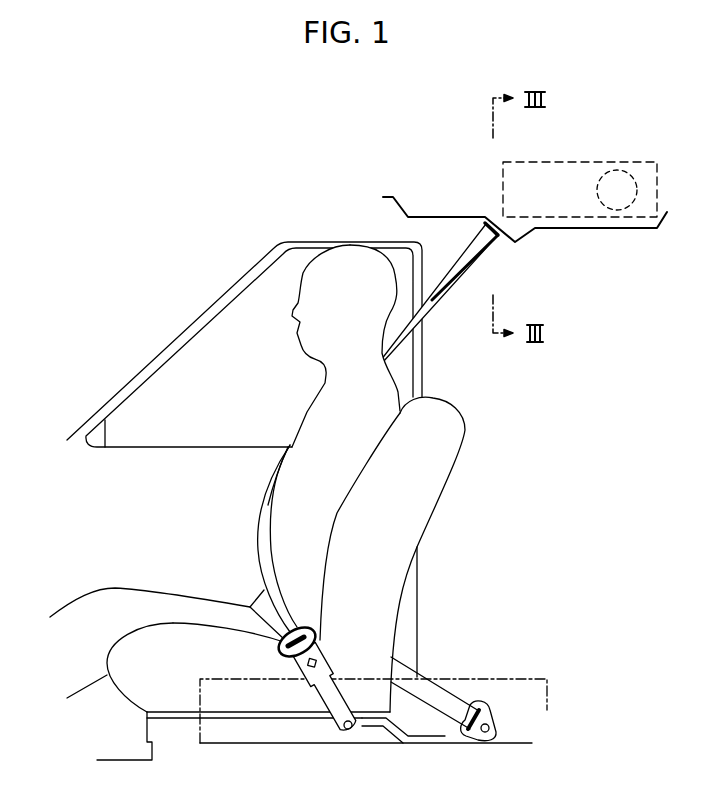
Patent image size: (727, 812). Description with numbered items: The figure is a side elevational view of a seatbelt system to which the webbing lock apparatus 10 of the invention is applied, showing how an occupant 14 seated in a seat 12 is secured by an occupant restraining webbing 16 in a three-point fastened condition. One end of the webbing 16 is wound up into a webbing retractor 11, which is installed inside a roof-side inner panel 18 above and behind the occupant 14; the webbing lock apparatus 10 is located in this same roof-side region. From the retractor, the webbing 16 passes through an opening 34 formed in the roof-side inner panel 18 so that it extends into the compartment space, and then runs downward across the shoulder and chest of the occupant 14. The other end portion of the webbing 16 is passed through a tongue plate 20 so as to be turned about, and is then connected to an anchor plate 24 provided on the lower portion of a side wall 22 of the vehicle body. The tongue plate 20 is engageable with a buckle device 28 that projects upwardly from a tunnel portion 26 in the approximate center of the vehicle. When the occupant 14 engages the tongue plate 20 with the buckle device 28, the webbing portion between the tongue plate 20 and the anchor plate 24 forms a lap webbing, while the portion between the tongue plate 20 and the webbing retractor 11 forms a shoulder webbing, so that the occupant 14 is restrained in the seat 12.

The webbing lock apparatus 10 is at (538, 163).
The webbing retractor 11 is at (615, 170).
The seat 12 is at (443, 476).
The occupant 14 is at (310, 410).
The webbing 16 is at (447, 293).
The roof-side inner panel 18 is at (555, 229).
The tongue plate 20 is at (307, 632).
The side wall 22 is at (500, 576).
The anchor plate 24 is at (497, 715).
The tunnel portion 26 is at (508, 677).
The buckle device 28 is at (325, 648).
The opening 34 is at (498, 237).